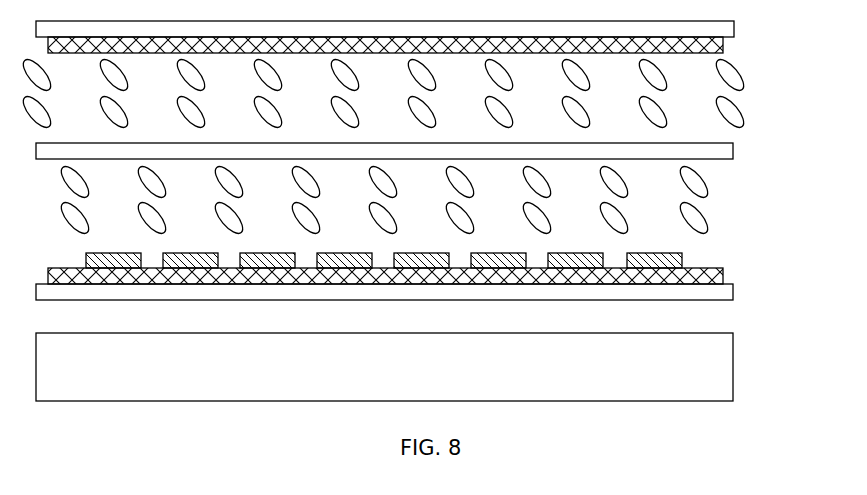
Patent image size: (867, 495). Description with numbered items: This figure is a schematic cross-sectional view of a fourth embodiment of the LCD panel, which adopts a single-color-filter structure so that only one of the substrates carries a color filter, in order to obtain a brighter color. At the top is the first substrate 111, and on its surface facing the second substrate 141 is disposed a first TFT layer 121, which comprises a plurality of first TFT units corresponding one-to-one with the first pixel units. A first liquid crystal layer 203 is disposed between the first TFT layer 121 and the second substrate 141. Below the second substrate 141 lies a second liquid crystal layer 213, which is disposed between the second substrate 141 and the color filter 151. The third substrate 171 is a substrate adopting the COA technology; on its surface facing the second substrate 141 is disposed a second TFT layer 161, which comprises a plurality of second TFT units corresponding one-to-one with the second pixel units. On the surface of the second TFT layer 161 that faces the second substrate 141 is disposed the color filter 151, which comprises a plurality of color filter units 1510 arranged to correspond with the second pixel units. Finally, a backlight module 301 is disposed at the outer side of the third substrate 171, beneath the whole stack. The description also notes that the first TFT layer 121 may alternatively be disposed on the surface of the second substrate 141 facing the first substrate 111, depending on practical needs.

The first substrate 111 is at (717, 29).
The first TFT layer 121 is at (717, 45).
The first liquid crystal layer 203 is at (733, 108).
The second substrate 141 is at (727, 149).
The second liquid crystal layer 213 is at (697, 180).
The color filter units 1510 is at (665, 255).
The color filter 151 is at (702, 259).
The second TFT layer 161 is at (722, 272).
The third substrate 171 is at (714, 290).
The backlight module 301 is at (720, 364).